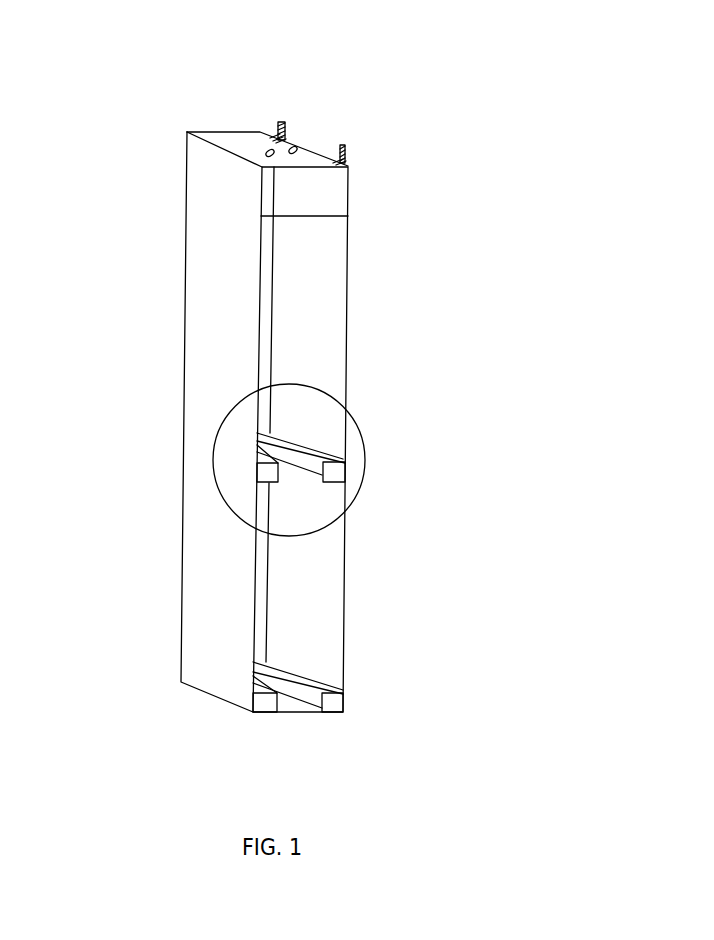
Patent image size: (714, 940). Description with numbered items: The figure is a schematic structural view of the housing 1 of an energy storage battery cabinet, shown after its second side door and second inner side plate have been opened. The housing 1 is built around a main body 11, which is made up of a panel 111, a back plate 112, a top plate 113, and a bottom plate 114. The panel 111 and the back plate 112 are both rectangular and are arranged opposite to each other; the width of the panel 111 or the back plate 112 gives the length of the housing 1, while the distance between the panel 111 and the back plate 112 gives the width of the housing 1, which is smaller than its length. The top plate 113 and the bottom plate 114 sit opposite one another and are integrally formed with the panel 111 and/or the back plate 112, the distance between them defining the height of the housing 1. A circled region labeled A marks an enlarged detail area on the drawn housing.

The housing 1 is at (155, 212).
The main body 11 is at (202, 422).
The panel 111 is at (195, 415).
The back plate 112 is at (347, 280).
The top plate 113 is at (281, 142).
The bottom plate 114 is at (288, 715).
The detail region A is at (327, 430).